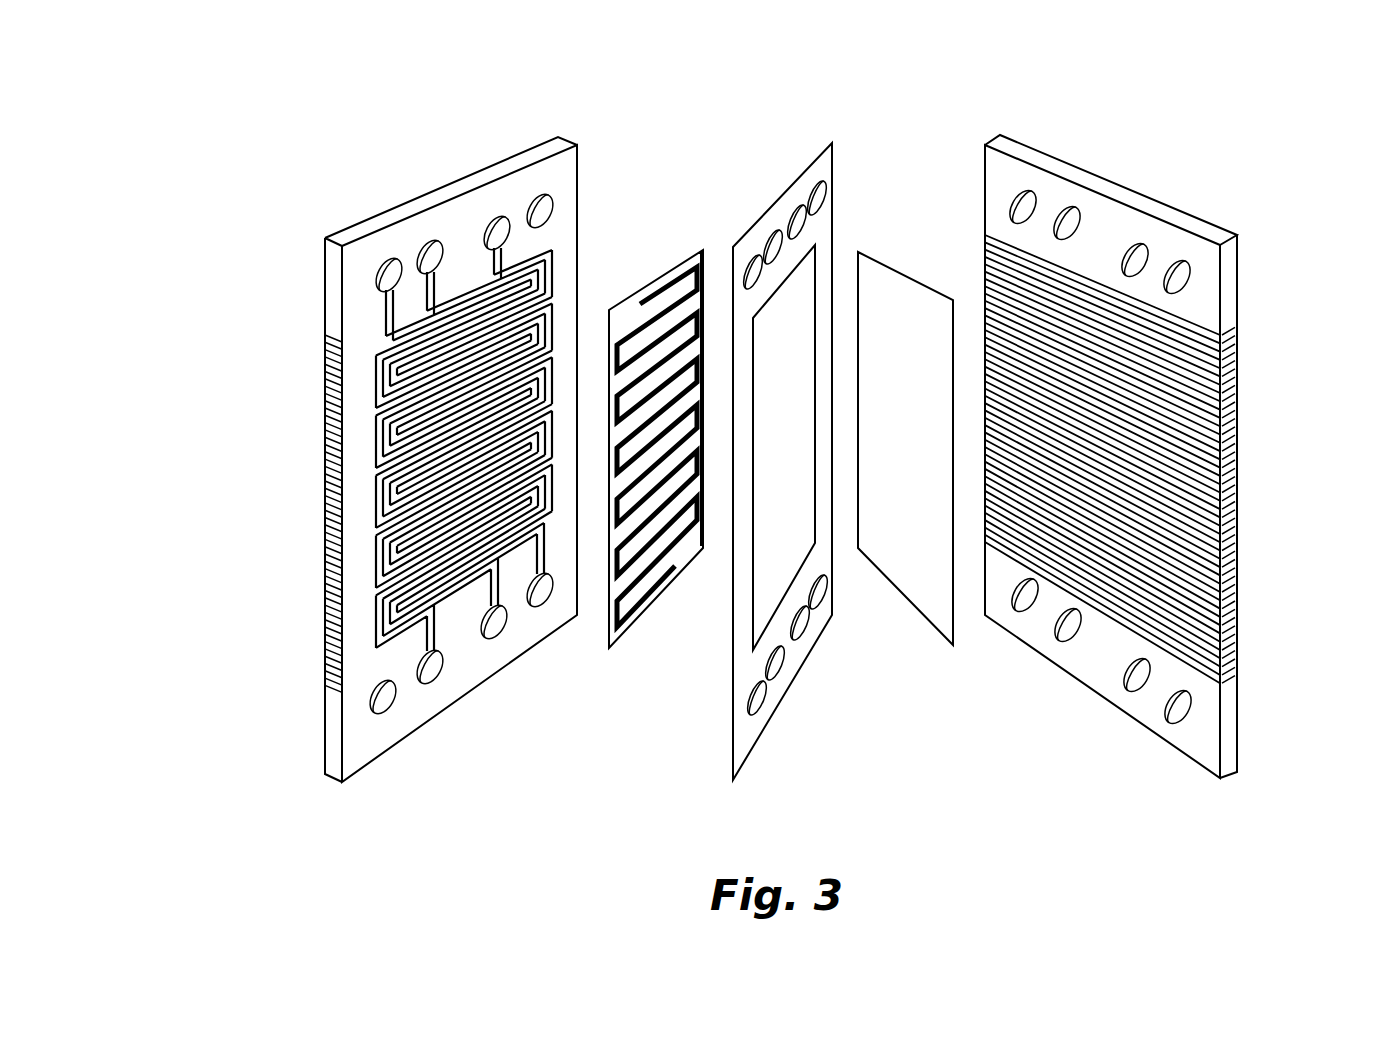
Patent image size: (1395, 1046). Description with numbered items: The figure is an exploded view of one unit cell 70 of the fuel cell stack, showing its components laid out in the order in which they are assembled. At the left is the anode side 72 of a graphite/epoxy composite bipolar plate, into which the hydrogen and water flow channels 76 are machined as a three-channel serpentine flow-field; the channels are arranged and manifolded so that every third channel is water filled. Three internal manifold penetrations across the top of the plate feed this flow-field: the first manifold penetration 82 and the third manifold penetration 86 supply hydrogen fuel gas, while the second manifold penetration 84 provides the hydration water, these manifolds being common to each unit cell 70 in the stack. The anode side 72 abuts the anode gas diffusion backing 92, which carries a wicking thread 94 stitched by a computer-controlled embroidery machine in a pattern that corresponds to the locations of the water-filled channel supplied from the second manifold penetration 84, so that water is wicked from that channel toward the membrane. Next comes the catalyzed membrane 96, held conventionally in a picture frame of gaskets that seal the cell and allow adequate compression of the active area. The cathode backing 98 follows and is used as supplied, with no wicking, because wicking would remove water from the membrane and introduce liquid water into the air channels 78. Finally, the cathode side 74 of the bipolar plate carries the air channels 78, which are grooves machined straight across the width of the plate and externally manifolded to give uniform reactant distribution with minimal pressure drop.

The unit cell 70 is at (903, 92).
The anode side 72 is at (558, 170).
The cathode side 74 is at (1008, 167).
The hydrogen water channels 76 is at (386, 353).
The air channels 78 is at (320, 636).
The first manifold penetration 82 is at (492, 220).
The second manifold penetration 84 is at (428, 242).
The third manifold penetration 86 is at (385, 260).
The anode gas diffusion backing 92 is at (686, 553).
The wicking thread 94 is at (665, 297).
The catalyzed membrane 96 is at (800, 543).
The cathode backing 98 is at (928, 588).